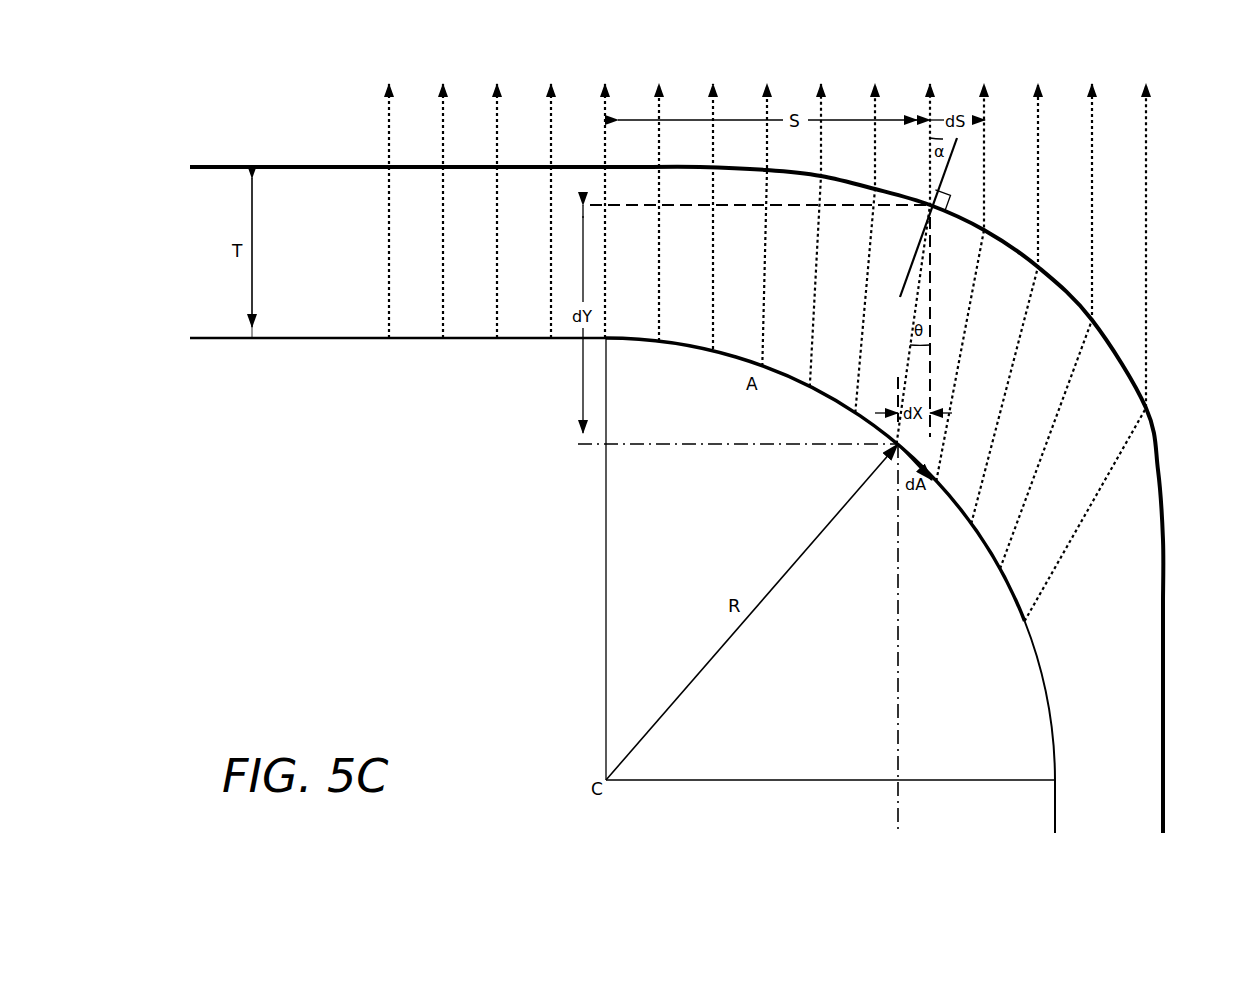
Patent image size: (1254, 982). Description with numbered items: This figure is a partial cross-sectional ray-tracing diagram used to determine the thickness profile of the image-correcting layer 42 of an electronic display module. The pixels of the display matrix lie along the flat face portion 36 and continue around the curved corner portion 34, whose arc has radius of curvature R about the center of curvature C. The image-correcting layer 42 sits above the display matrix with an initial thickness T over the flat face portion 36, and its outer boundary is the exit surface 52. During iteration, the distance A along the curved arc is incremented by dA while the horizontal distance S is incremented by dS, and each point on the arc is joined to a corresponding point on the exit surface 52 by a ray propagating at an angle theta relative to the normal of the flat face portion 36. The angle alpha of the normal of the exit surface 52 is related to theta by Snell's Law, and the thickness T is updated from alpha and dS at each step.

The curved corner portion 34 is at (946, 540).
The flat face portion 36 is at (514, 422).
The image-correcting layer 42 is at (1115, 641).
The exit surface 52 is at (1165, 690).